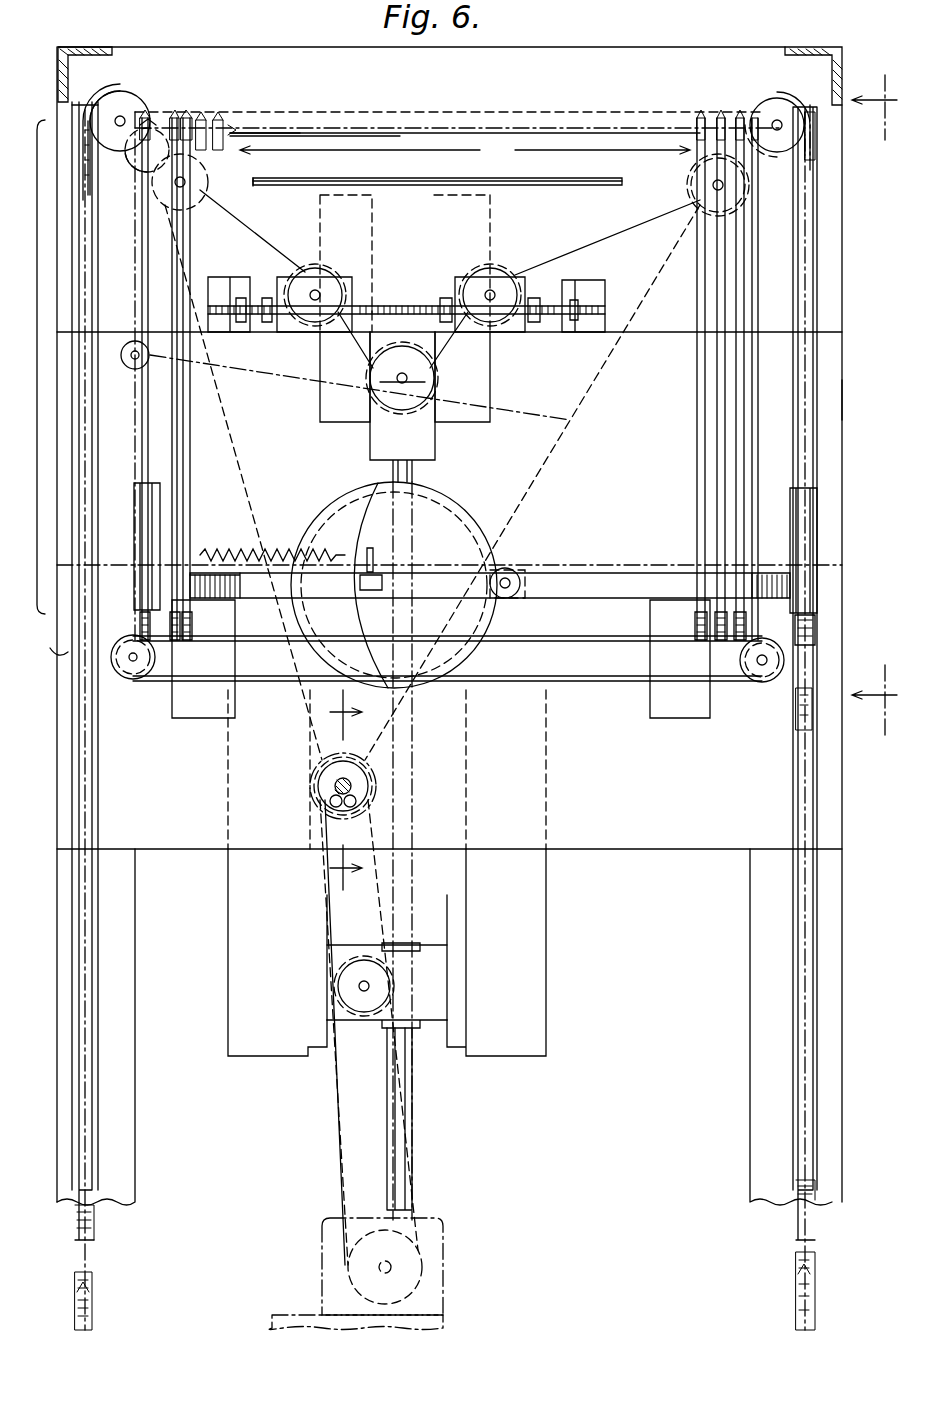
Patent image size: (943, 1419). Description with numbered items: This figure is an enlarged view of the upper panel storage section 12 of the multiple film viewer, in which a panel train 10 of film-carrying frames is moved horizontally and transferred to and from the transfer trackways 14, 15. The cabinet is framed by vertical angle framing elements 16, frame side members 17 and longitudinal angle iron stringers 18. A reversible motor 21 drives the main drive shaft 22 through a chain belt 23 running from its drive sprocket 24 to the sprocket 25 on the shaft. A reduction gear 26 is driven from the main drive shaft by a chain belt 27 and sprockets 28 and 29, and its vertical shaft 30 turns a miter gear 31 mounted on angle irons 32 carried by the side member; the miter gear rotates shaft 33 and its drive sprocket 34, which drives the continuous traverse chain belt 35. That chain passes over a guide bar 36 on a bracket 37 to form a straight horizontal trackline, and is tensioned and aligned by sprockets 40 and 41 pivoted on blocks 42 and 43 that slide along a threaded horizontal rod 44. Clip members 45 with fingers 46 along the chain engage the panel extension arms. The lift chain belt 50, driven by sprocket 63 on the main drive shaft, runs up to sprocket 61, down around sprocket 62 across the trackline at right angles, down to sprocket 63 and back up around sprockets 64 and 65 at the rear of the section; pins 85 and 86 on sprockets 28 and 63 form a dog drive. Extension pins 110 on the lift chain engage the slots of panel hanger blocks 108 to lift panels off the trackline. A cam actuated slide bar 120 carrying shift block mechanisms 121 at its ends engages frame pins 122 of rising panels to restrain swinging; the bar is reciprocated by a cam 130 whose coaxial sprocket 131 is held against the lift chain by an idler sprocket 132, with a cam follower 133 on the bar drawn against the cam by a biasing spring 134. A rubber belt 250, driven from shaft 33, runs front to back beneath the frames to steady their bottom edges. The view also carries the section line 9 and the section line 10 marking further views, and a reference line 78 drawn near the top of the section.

The section line 9- 9 is at (874, 398).
The panel train 10 is at (465, 514).
The upper panel storage section 12 is at (36, 364).
The front panel transfer trackway 14 is at (842, 404).
The panel transfer trackway 15 is at (50, 655).
The vertical angle framing element 16 is at (56, 1092).
The frame side member 17 is at (668, 48).
The longitudinal angle iron stringer 18 is at (56, 92).
The reversible motor 21 is at (296, 1315).
The main drive shaft 22 is at (352, 785).
The chain belt 23 is at (330, 1112).
The drive sprocket 24 is at (322, 1232).
The sprocket 25 is at (318, 757).
The reduction gear 26 is at (447, 1030).
The chain belt 27 is at (312, 905).
The sprocket 28 is at (318, 770).
The sprocket 29 is at (364, 1014).
The shaft 30 is at (412, 1150).
The miter gear 31 is at (438, 447).
The angle iron 32 is at (322, 372).
The shaft 33 is at (410, 380).
The drive sprocket 34 is at (385, 392).
The traverse chain belt 35 is at (622, 226).
The guide bar 36 is at (522, 182).
The bracket 37 is at (285, 186).
The sprocket 40 is at (298, 275).
The sprocket 41 is at (505, 285).
The block 42 is at (288, 332).
The block 43 is at (518, 332).
The threaded horizontal rod 44 is at (606, 306).
The clip member 45 is at (232, 128).
The finger 46 is at (152, 128).
The lift chain belt 50 is at (240, 455).
The sprocket 61 is at (778, 98).
The sprocket 62 is at (690, 192).
The sprocket 63 is at (372, 765).
The sprocket 64 is at (210, 196).
The sprocket 65 is at (140, 100).
The guide line 78 is at (452, 130).
The pin 85 is at (330, 808).
The pin 86 is at (356, 808).
The hanger block 108 is at (222, 118).
The extension pin 110 is at (813, 135).
The slide bar 120 is at (592, 580).
The shift block mechanism 121 is at (172, 533).
The frame pin 122 is at (182, 623).
The cam 130 is at (440, 515).
The sprocket 131 is at (340, 525).
The idler sprocket 132 is at (530, 572).
The cam follower 133 is at (505, 568).
The biasing spring 134 is at (268, 555).
The rubber belt 250 is at (588, 682).